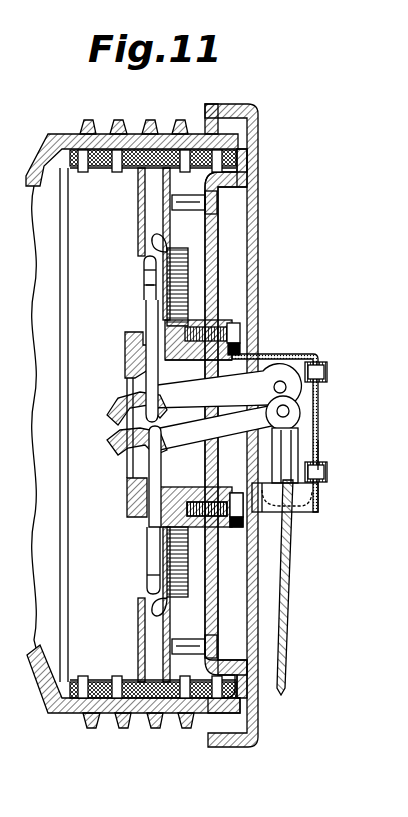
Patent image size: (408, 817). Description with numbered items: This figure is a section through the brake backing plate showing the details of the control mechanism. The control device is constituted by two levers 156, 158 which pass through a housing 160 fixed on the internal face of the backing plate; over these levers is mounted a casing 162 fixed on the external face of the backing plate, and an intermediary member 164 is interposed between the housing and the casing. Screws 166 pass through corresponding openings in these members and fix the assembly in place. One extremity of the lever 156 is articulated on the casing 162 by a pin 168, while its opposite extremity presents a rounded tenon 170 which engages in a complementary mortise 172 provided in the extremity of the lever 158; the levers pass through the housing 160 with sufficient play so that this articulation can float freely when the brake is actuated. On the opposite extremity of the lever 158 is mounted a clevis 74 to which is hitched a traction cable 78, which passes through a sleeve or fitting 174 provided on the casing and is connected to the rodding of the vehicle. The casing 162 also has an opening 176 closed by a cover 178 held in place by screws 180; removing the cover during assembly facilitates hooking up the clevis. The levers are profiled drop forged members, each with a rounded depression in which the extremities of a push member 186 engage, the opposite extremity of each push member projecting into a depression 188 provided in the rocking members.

The clevis 74 is at (302, 430).
The traction cable 78 is at (284, 583).
The lever 156 is at (241, 386).
The lever 158 is at (243, 432).
The housing 160 is at (127, 334).
The casing 162 is at (300, 356).
The intermediary member 164 is at (216, 321).
The screws 166 is at (239, 333).
The pin 168 is at (320, 361).
The rounded tenon 170 is at (120, 410).
The mortise 172 is at (118, 453).
The sleeve or fitting 174 is at (319, 504).
The opening 176 is at (299, 447).
The cover 178 is at (319, 455).
The screws 180 is at (324, 380).
The push member 186 is at (156, 489).
The depression 188 is at (146, 320).